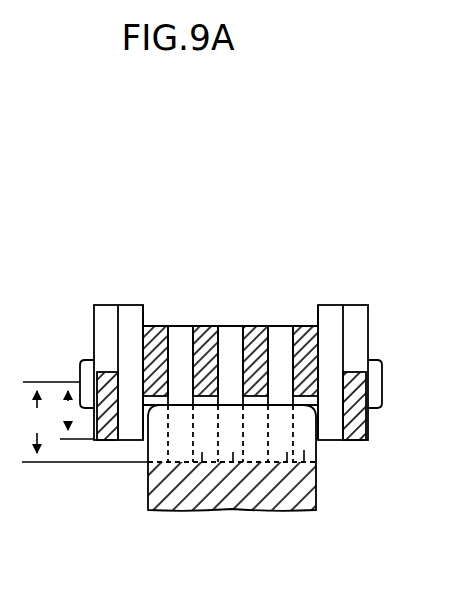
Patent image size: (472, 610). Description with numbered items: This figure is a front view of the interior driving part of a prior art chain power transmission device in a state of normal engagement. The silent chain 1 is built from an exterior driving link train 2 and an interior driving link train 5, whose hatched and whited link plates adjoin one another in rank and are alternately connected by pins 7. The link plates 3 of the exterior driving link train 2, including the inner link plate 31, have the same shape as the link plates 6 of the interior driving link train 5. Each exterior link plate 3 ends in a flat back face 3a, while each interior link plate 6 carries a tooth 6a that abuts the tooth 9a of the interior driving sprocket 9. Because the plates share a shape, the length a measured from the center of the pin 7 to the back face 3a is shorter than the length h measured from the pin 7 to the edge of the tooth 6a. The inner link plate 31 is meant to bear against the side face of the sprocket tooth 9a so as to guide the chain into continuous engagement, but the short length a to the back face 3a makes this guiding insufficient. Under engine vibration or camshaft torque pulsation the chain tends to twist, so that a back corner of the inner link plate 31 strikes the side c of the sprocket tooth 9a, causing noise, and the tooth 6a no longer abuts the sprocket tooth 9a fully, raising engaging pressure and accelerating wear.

The silent chain 1 is at (262, 227).
The exterior driving link train 2 is at (117, 282).
The link plate 3 is at (106, 309).
The inner link plate 31 is at (130, 307).
The back face 3a is at (100, 441).
The interior driving link train 5 is at (202, 278).
The link plate 6 is at (212, 326).
The tooth 6a is at (202, 452).
The pin 7 is at (373, 380).
The sprocket 9 is at (278, 511).
The tooth 9a is at (310, 416).
The side c is at (143, 447).
The length h is at (85, 422).
The length a is at (77, 415).